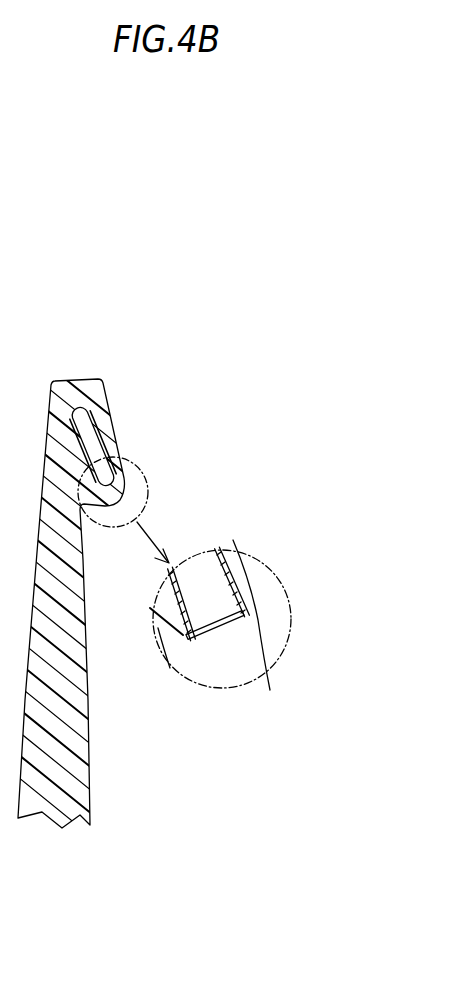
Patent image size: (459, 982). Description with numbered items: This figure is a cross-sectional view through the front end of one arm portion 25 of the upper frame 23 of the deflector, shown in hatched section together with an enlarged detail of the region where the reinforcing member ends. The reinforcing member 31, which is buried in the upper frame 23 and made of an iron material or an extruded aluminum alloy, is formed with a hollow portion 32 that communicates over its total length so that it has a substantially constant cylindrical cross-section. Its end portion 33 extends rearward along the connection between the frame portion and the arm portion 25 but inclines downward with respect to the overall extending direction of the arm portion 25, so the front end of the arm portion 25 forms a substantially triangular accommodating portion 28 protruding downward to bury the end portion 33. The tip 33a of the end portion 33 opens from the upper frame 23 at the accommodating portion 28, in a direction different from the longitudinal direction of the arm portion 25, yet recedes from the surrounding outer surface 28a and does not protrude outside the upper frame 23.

The arm portion 25 is at (177, 775).
The upper frame 23 is at (34, 601).
The end portion 33 is at (196, 445).
The reinforcing member 31 is at (93, 446).
The accommodating portion 28 is at (118, 452).
The outer surface 28a is at (185, 644).
The hollow portion 32 is at (206, 642).
The tip 33a is at (244, 626).